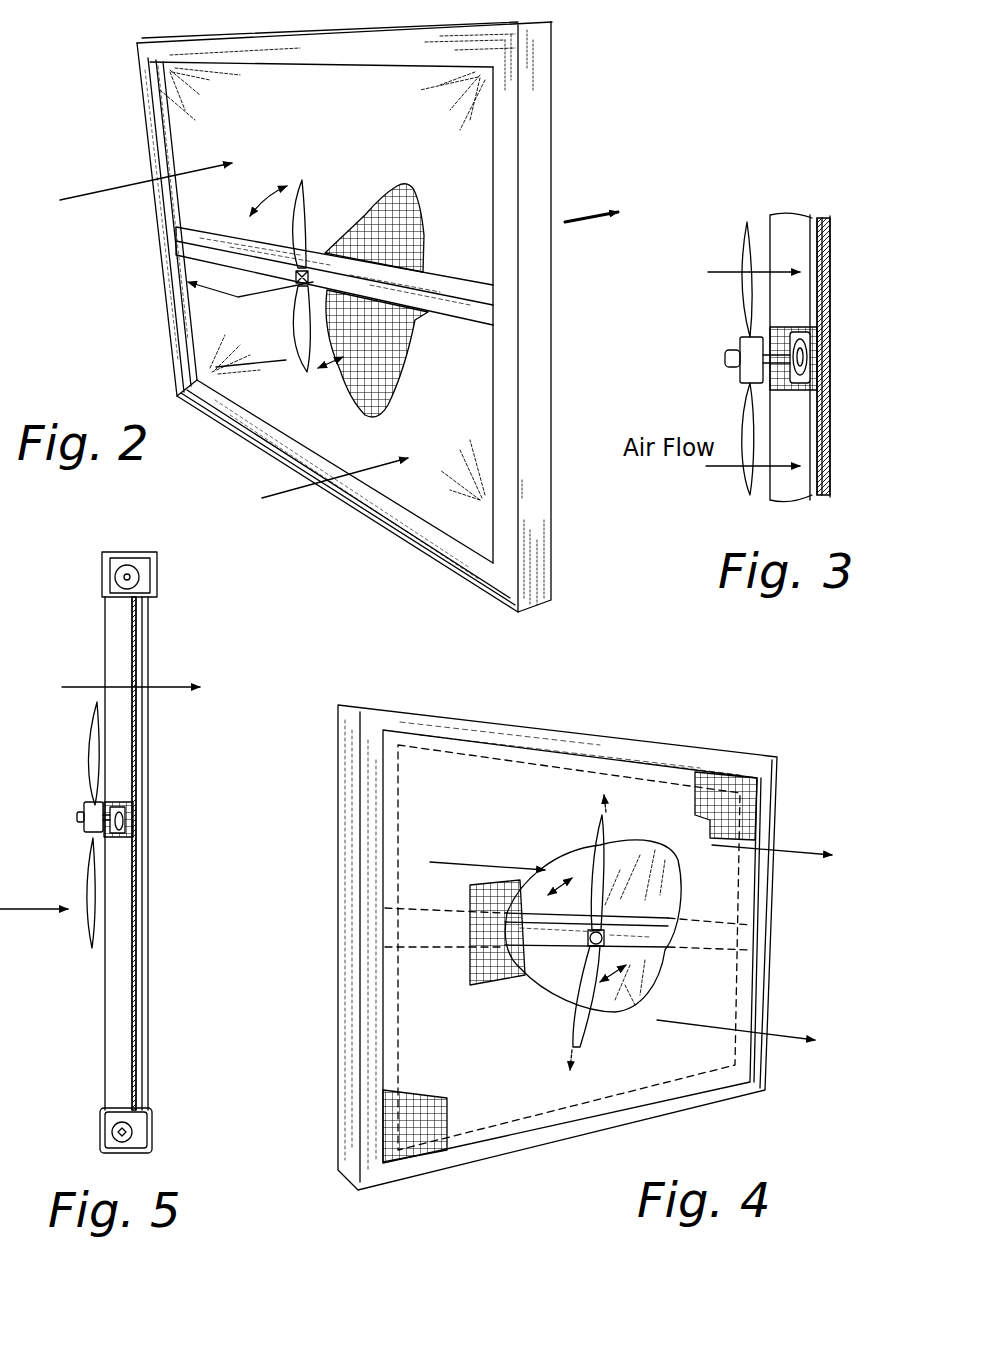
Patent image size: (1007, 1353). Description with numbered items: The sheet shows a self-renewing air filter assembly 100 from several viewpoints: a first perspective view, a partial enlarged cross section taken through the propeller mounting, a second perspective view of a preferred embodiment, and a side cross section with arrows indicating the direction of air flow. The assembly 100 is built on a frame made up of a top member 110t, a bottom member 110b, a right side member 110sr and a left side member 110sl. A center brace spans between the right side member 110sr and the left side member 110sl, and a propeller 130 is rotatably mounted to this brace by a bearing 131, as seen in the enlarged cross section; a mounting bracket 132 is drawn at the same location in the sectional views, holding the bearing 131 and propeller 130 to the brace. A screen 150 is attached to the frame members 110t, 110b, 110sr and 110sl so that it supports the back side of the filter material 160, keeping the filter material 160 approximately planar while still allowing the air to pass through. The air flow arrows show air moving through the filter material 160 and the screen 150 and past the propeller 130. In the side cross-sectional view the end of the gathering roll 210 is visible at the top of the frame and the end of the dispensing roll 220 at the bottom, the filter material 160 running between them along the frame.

In FIG. 2, the self-renewing air filter assembly 100 is at (338, 317).
In FIG. 5, the self-renewing air filter assembly 100 is at (136, 846).
In FIG. 4, the self-renewing air filter assembly 100 is at (609, 938).
In FIG. 2, the top member 110t is at (367, 52).
In FIG. 2, the left side member 110sl is at (165, 299).
In FIG. 2, the right side member 110sr is at (540, 390).
In FIG. 2, the bottom member 110b is at (432, 545).
In FIG. 2, the propeller 130 is at (297, 217).
In FIG. 3, the propeller 130 is at (747, 313).
In FIG. 5, the propeller 130 is at (88, 773).
In FIG. 4, the propeller 130 is at (582, 992).
In FIG. 3, the bearing 131 is at (760, 362).
In FIG. 3, the mounting bracket 132 is at (800, 345).
In FIG. 5, the mounting bracket 132 is at (133, 812).
In FIG. 2, the screen 150 is at (415, 238).
In FIG. 5, the screen 150 is at (148, 738).
In FIG. 4, the screen 150 is at (716, 775).
In FIG. 2, the filter material 160 is at (340, 133).
In FIG. 5, the filter material 160 is at (135, 660).
In FIG. 5, the gathering roll 210 is at (140, 576).
In FIG. 5, the dispensing roll 220 is at (132, 1130).